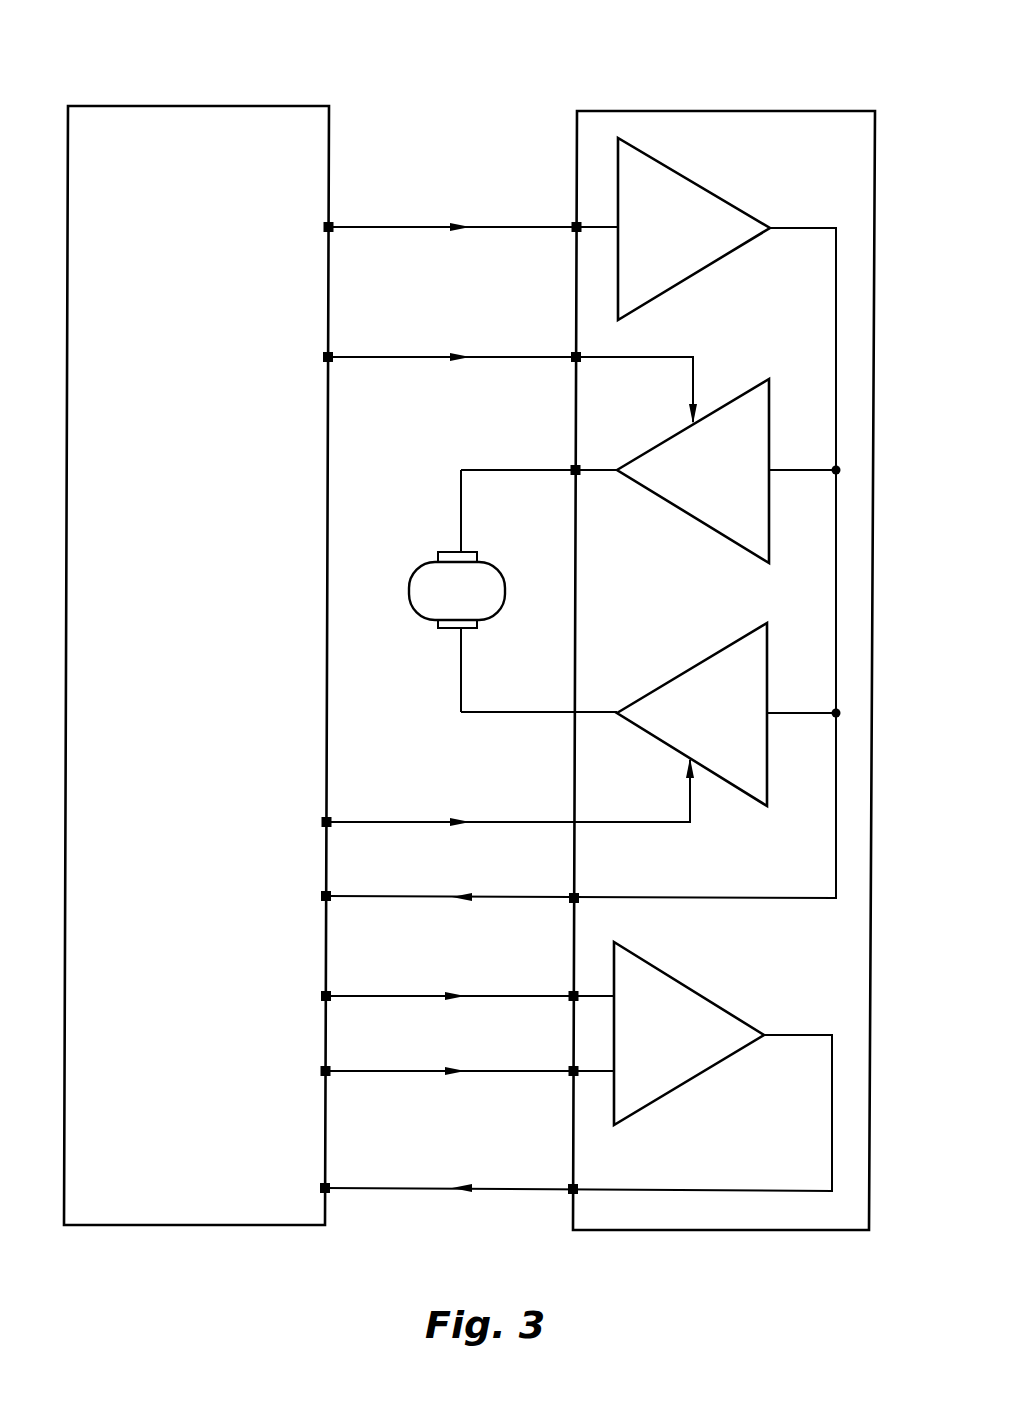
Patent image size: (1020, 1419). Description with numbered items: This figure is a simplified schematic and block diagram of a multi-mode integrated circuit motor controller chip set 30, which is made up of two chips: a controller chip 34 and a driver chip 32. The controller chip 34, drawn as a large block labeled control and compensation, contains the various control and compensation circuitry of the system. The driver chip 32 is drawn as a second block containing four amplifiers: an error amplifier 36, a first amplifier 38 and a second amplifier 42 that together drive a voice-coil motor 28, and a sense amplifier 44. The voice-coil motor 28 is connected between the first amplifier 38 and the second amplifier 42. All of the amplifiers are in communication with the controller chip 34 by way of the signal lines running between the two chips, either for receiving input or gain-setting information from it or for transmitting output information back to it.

The motor controller chip set 30 is at (118, 36).
The controller chip 34 is at (330, 139).
The driver chip 32 is at (876, 143).
The error amplifier 36 is at (668, 169).
The first amplifier 38 is at (747, 393).
The second amplifier 42 is at (745, 635).
The sense amplifier 44 is at (667, 975).
The voice-coil motor 28 is at (500, 568).